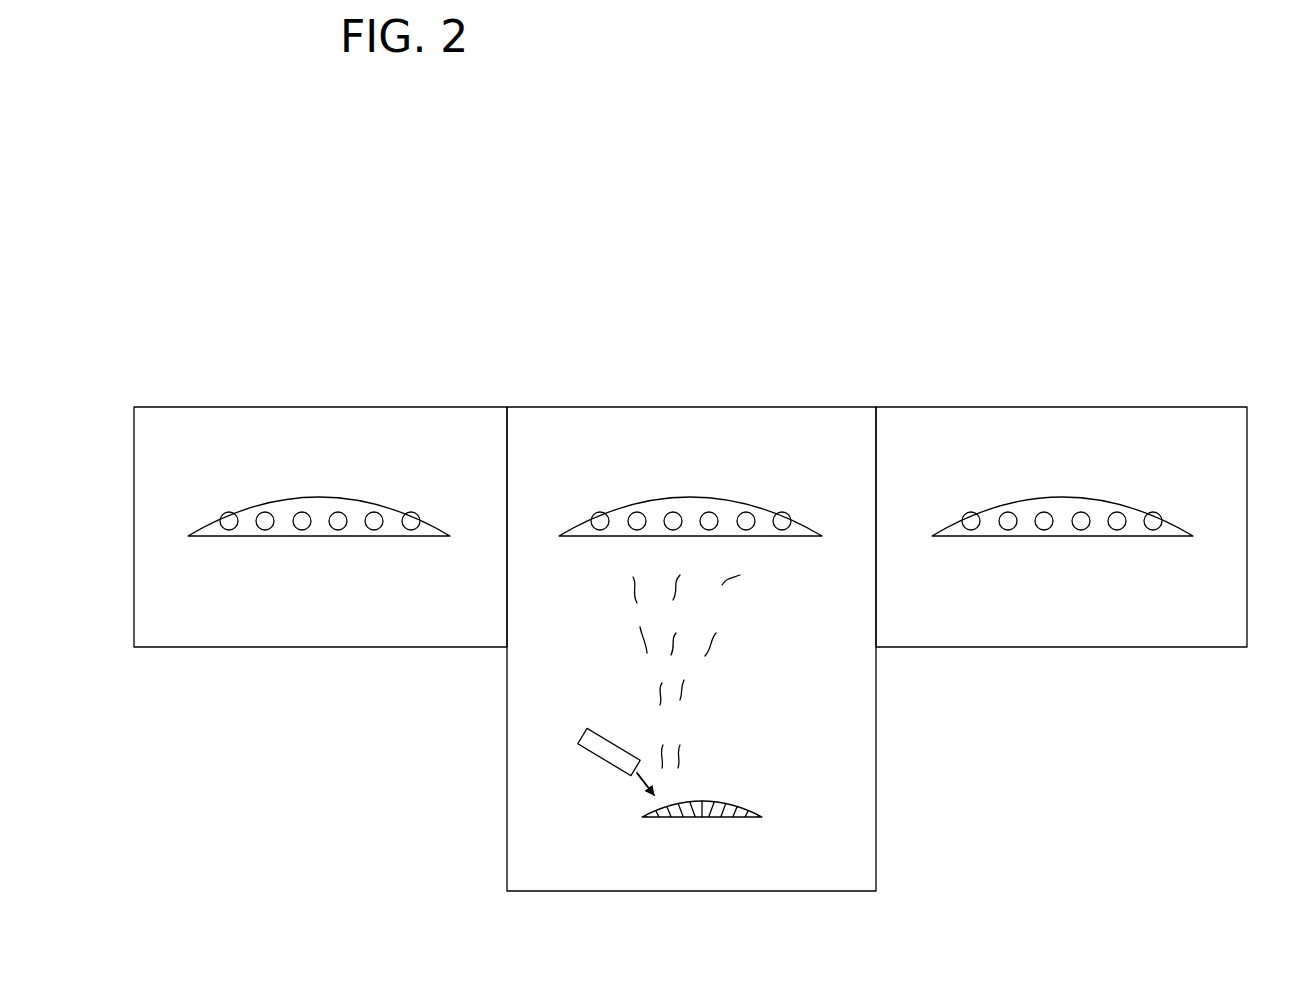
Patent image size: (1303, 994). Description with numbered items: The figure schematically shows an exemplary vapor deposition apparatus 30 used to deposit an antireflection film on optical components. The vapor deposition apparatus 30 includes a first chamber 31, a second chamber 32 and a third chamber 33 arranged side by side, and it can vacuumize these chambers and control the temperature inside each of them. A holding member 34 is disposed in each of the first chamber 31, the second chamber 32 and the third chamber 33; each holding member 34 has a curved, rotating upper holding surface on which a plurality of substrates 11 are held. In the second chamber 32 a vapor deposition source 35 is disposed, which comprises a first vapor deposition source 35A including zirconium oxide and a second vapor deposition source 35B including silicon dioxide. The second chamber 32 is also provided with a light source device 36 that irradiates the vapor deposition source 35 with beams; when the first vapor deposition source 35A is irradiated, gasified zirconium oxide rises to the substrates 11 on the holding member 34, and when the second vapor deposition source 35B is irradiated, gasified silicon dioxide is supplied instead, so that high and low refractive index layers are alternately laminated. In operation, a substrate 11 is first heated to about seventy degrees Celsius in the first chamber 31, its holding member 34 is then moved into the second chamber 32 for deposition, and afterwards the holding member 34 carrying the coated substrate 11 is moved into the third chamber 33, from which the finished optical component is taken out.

The vapor deposition apparatus 30 is at (1174, 281).
The first chamber 31 is at (325, 407).
The second chamber 32 is at (697, 407).
The third chamber 33 is at (1068, 407).
The holding member 34 is at (395, 503).
The substrate 11 is at (229, 512).
The vapor deposition source 35 is at (767, 800).
The first vapor deposition source 35A is at (683, 803).
The second vapor deposition source 35B is at (722, 807).
The light source device 36 is at (612, 738).